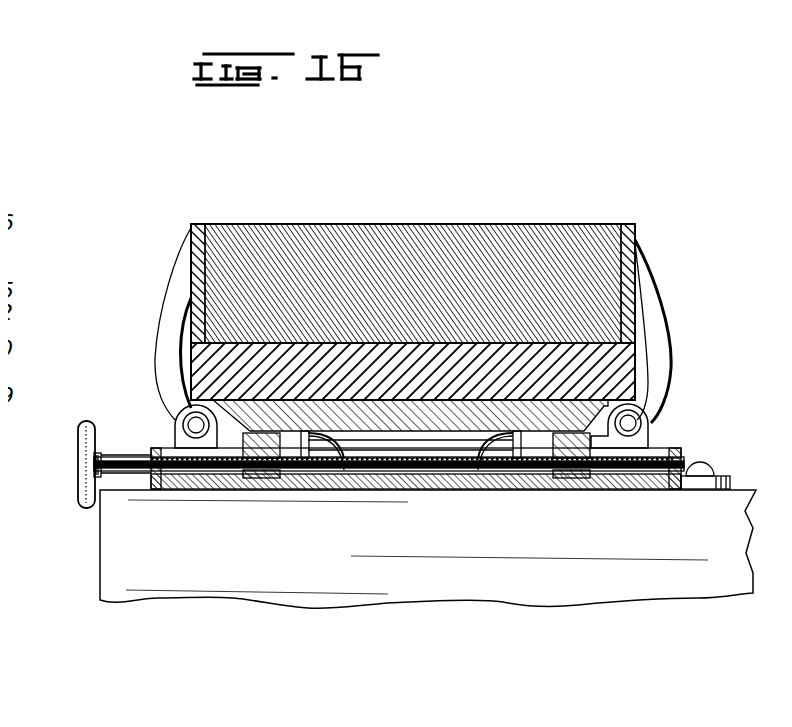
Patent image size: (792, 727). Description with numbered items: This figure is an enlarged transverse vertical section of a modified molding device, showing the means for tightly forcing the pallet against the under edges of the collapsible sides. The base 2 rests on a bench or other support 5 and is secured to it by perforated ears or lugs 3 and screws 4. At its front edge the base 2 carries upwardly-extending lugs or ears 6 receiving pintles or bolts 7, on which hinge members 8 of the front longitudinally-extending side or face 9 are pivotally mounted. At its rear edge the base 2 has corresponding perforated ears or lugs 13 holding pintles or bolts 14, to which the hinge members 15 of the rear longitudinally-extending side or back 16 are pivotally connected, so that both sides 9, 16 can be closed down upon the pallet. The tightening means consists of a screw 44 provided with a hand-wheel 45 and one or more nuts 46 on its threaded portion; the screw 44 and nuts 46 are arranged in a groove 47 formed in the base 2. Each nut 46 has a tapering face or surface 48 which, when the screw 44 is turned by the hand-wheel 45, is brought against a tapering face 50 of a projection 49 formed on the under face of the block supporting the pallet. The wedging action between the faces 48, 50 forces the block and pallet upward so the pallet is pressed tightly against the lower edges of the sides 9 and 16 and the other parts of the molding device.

The base 2 is at (458, 470).
The perforated ears or lugs 3 is at (722, 474).
The screws 4 is at (702, 462).
The support 5 is at (102, 536).
The upwardly-extending lugs or ears 6 is at (168, 438).
The pintles or bolts 7 is at (176, 414).
The hinge members 8 is at (160, 316).
The front longitudinally-extending side or face 9 is at (188, 218).
The upwardly-extending perforated ears or lugs 13 is at (646, 437).
The pintles or bolts 14 is at (630, 410).
The hinge members 15 is at (650, 314).
The rear longitudinally-extending side or back 16 is at (630, 226).
The screw 44 is at (425, 466).
The hand-wheel 45 is at (74, 430).
The nut 46 is at (250, 468).
The groove 47 is at (180, 470).
The tapering face or surface 48 is at (276, 450).
The projection 49 is at (304, 438).
The tapering face 50 is at (330, 442).